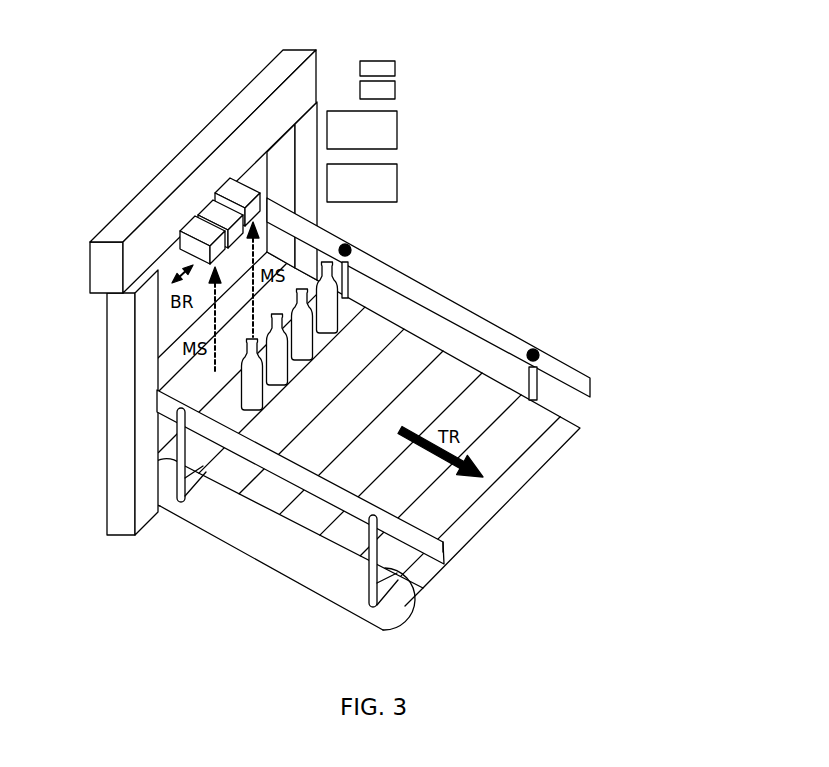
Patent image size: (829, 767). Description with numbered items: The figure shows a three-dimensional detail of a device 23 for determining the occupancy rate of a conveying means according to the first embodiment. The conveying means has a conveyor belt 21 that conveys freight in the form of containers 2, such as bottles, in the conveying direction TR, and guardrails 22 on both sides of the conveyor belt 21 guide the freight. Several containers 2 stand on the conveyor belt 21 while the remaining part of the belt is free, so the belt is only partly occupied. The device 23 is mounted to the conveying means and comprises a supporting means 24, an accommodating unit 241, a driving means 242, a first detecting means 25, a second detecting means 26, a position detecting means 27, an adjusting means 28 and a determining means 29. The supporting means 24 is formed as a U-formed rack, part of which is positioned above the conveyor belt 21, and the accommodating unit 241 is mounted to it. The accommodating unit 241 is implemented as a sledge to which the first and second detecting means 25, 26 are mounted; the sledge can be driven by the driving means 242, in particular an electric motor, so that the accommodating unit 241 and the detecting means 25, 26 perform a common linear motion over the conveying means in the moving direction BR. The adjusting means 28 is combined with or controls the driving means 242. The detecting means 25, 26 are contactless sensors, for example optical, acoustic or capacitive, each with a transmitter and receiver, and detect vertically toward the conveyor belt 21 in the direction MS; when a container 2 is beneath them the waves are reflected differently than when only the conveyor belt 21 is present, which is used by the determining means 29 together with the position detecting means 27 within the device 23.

The container 2 is at (253, 388).
The conveyor belt 21 is at (507, 508).
The guardrail 22 is at (470, 312).
The device for determining an occupancy rate 23 is at (488, 80).
The supporting means 24 is at (320, 62).
The accommodating unit 241 is at (222, 210).
The driving means 242 is at (395, 68).
The first detecting means 25 is at (237, 193).
The second detecting means 26 is at (195, 232).
The position detecting means 27 is at (395, 90).
The adjusting means 28 is at (397, 125).
The determining means 29 is at (397, 178).